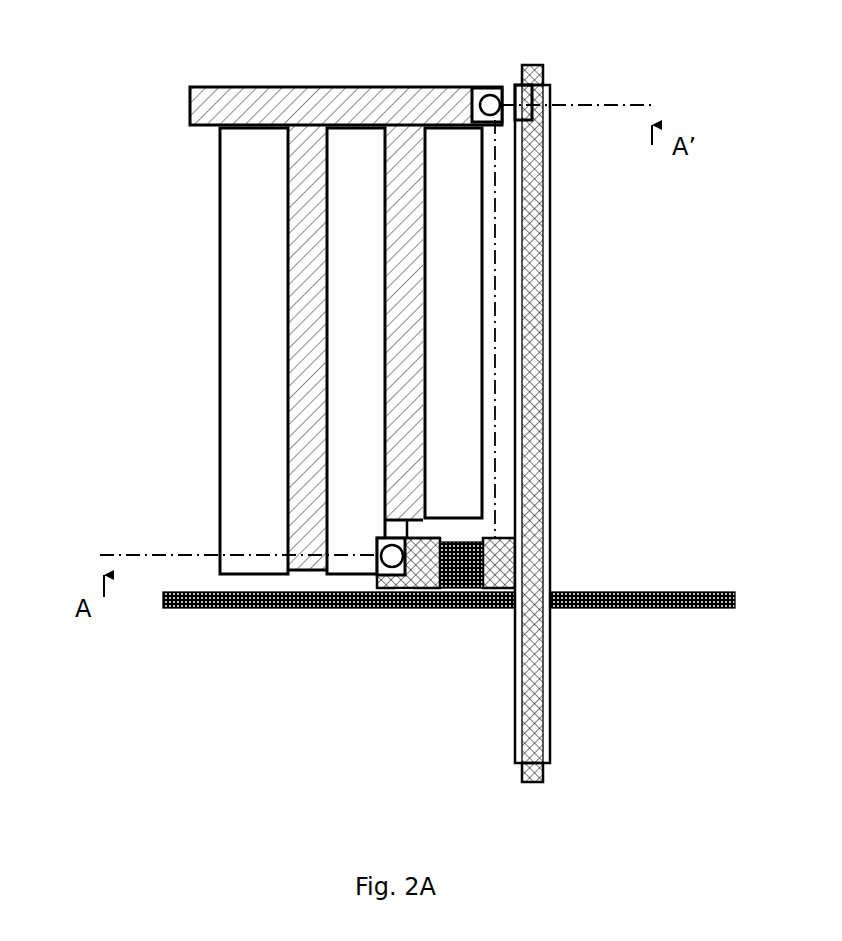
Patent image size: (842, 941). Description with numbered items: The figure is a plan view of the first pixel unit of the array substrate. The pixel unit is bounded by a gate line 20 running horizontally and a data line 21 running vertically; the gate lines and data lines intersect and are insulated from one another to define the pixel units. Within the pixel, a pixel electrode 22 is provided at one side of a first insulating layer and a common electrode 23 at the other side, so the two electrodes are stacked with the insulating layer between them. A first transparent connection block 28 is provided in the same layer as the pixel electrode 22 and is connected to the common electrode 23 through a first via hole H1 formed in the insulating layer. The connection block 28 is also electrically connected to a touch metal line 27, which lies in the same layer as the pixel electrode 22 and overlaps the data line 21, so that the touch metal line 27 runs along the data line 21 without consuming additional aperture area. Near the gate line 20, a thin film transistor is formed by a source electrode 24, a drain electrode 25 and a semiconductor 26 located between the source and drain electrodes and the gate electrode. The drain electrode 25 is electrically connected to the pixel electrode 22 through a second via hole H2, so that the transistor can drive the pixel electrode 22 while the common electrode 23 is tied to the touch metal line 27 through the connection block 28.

The gate line 20 is at (633, 592).
The data line 21 is at (542, 765).
The pixel electrode 22 is at (265, 107).
The common electrode 23 is at (220, 452).
The source electrode 24 is at (505, 553).
The drain electrode 25 is at (405, 590).
The semiconductor 26 is at (467, 538).
The touch metal line 27 is at (543, 242).
The first transparent connection block 28 is at (507, 113).
The first via hole H1 is at (490, 105).
The second via hole H2 is at (386, 560).